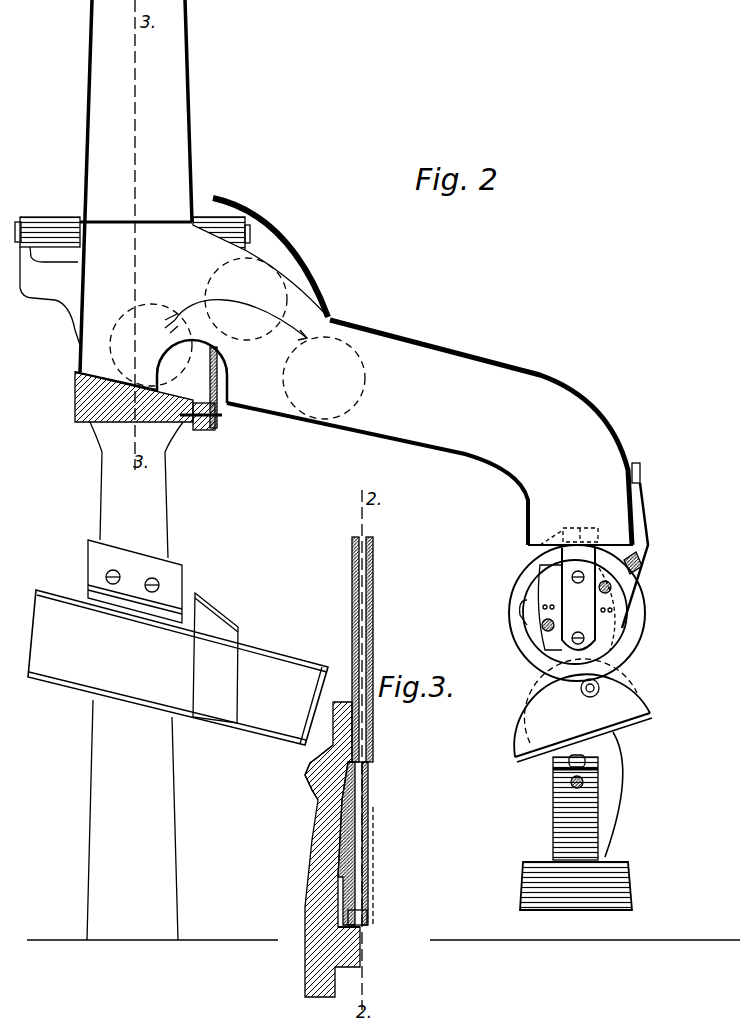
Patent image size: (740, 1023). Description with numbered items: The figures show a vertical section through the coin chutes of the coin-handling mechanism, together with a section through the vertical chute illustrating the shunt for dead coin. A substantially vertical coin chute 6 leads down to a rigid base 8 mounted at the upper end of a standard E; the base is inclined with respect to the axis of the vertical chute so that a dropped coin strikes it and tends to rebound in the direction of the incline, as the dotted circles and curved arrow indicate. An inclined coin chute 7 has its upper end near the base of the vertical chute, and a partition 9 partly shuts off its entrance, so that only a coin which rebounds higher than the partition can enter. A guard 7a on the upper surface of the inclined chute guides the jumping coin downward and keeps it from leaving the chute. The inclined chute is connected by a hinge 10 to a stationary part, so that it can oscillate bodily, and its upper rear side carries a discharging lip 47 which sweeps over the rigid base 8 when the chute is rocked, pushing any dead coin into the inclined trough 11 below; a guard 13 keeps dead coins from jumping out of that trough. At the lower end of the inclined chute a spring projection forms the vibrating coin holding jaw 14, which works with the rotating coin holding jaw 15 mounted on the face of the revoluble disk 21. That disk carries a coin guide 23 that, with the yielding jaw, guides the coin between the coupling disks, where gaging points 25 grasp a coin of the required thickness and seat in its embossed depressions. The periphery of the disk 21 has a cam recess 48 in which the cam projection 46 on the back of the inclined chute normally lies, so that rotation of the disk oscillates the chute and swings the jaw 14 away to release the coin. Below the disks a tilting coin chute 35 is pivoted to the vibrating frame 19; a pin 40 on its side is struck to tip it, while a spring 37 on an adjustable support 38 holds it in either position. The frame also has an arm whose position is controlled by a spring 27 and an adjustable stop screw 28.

In FIG. 2, the vertical coin chute 6 is at (192, 54).
In FIG. 3, the vertical coin chute 6 is at (373, 584).
In FIG. 2, the hinge 10 is at (36, 210).
In FIG. 3, the hinge 10 is at (318, 775).
In FIG. 2, the guard 7a is at (320, 248).
In FIG. 2, the inclined coin chute 7 is at (433, 432).
In FIG. 3, the inclined coin chute 7 is at (368, 845).
In FIG. 2, the discharging lip 47 is at (95, 372).
In FIG. 3, the discharging lip 47 is at (367, 913).
In FIG. 2, the rigid base 8 is at (80, 388).
In FIG. 3, the rigid base 8 is at (360, 937).
In FIG. 2, the partition 9 is at (217, 372).
In FIG. 2, the inclined trough 11 is at (178, 642).
In FIG. 2, the guard 13 is at (222, 608).
In FIG. 2, the cam projection 46 is at (582, 527).
In FIG. 2, the disk 21 is at (515, 574).
In FIG. 2, the coin guide 23 is at (578, 599).
In FIG. 2, the gaging points 25 is at (577, 606).
In FIG. 2, the cam recess 48 is at (642, 562).
In FIG. 2, the vibrating coin holding jaw 14 is at (632, 598).
In FIG. 2, the rotating coin holding jaw 15 is at (527, 623).
In FIG. 2, the tilting coin chute 35 is at (583, 710).
In FIG. 2, the pin 40 is at (594, 697).
In FIG. 2, the spring 37 is at (625, 758).
In FIG. 2, the spring 27 is at (572, 772).
In FIG. 2, the adjustable stop screw 28 is at (583, 786).
In FIG. 2, the vibrating frame 19 is at (562, 823).
In FIG. 2, the adjustable support 38 is at (603, 828).
In FIG. 2, the standard E is at (135, 681).
In FIG. 3, the standard E is at (301, 988).